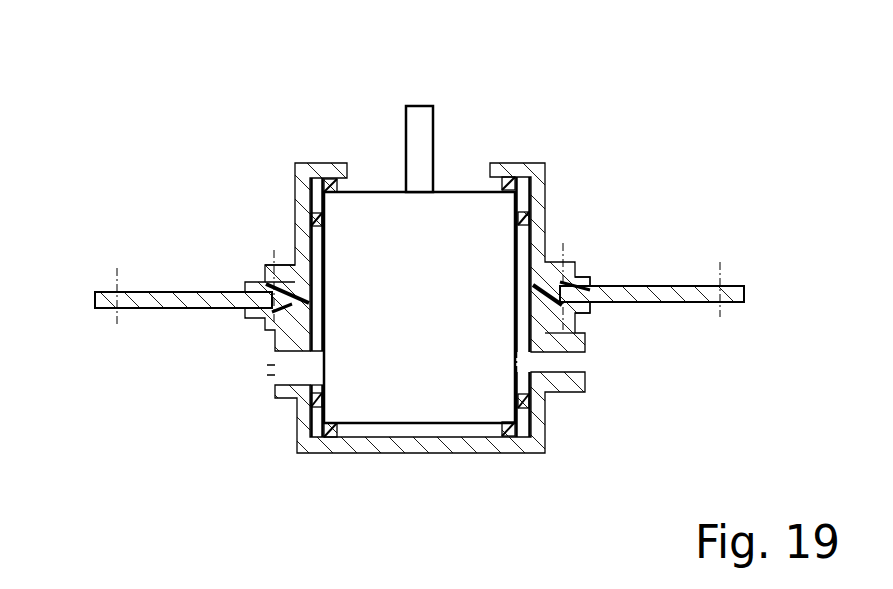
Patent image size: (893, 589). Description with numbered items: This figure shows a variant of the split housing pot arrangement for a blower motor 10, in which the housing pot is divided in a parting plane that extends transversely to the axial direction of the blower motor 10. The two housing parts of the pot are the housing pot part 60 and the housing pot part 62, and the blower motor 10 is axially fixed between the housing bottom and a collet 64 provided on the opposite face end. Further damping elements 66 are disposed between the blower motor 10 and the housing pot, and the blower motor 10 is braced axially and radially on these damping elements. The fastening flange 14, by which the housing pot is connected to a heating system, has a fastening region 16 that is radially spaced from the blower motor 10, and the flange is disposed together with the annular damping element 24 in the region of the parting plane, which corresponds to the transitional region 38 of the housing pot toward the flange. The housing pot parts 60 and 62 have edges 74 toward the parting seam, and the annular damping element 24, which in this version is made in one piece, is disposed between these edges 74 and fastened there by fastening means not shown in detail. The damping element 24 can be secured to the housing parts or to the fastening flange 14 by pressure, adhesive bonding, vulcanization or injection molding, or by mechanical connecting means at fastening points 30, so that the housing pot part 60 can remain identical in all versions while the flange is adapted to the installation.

The blower motor 10 is at (433, 385).
The fastening flange 14 is at (707, 295).
The fastening region 16 is at (117, 276).
The annular damping element 24 is at (593, 307).
The fastening points 30 is at (261, 258).
The transitional region 38 is at (605, 232).
The housing pot part 60 is at (303, 222).
The housing pot part 62 is at (513, 442).
The collet 64 is at (328, 178).
The further damping elements 66 is at (330, 437).
The edges 74 is at (270, 327).